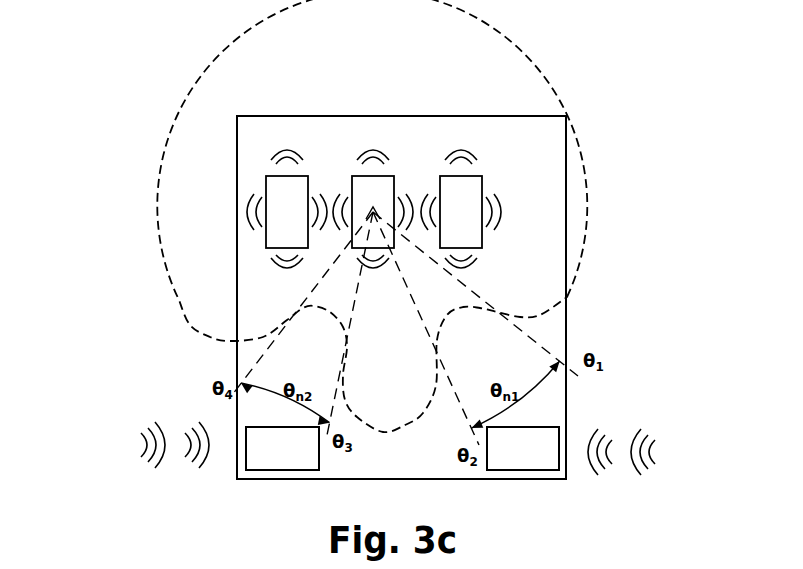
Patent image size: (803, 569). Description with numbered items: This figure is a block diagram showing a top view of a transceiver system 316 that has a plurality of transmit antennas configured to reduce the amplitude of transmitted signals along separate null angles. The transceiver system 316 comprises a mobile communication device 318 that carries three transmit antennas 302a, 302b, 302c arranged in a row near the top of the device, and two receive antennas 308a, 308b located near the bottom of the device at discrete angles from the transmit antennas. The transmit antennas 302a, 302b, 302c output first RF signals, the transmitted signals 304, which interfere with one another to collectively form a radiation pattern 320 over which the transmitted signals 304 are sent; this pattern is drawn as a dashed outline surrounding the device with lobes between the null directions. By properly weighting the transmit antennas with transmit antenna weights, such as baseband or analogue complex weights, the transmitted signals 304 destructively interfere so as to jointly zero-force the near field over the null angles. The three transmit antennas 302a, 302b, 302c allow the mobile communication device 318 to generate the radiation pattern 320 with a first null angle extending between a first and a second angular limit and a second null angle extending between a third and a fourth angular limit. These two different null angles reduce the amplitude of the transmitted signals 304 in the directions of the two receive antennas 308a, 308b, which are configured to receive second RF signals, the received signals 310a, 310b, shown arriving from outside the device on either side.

The transceiver system 316 is at (112, 43).
The radiation pattern 320 is at (522, 44).
The transmit antenna 302a is at (308, 175).
The transmit antenna 302b is at (394, 175).
The transmit antenna 302c is at (482, 175).
The transmitted signals 304 is at (480, 263).
The receive antenna 308a is at (523, 448).
The receive antenna 308b is at (282, 448).
The received signals 310a is at (657, 410).
The received signals 310b is at (129, 410).
The mobile communication device 318 is at (262, 480).